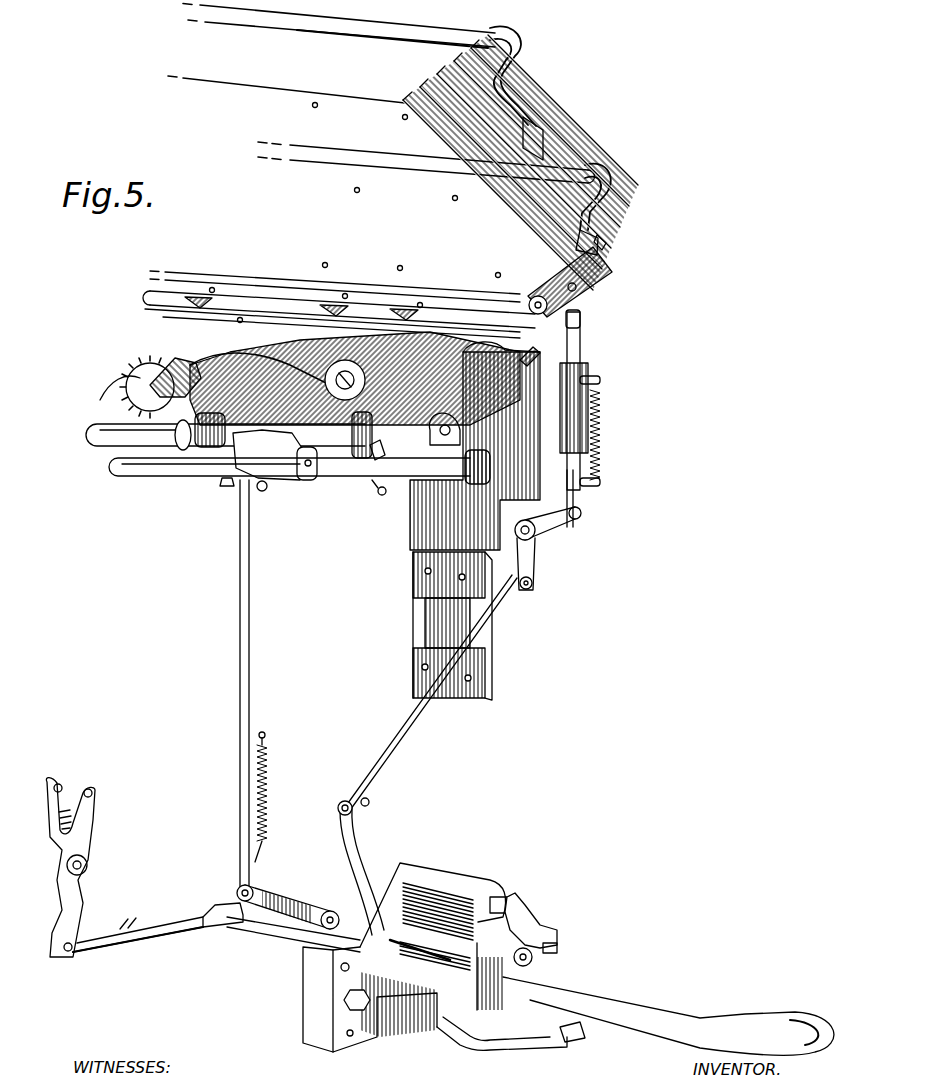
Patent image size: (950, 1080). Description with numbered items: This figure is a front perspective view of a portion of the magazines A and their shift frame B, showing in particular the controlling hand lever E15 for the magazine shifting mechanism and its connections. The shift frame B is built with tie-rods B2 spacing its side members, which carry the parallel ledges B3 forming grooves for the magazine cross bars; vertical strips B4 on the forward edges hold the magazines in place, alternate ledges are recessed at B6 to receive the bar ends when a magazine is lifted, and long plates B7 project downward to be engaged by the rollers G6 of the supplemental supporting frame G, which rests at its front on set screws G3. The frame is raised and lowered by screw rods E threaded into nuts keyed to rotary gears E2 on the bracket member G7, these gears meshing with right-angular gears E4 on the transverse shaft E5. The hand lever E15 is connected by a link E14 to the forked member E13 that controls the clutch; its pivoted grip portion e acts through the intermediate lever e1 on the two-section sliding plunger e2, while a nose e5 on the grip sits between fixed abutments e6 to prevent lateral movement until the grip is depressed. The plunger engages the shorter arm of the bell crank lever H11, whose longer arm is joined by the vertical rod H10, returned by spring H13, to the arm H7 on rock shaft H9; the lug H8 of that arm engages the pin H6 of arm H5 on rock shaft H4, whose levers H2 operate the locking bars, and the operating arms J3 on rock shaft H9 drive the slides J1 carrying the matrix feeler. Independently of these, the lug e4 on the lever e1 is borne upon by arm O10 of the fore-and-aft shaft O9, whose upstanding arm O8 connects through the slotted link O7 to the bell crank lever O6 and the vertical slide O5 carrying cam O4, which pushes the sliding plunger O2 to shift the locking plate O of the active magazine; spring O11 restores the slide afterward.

The tie-rods B2 is at (420, 40).
The ledges B3 is at (450, 138).
The long plates B7 is at (543, 147).
The recesses B6 is at (523, 250).
The vertical strips B4 is at (607, 230).
The supplemental supporting frame G is at (603, 270).
The cam O4 is at (580, 285).
The vertical slide O5 is at (587, 337).
The sliding plunger O2 is at (547, 330).
The slides J1 is at (573, 347).
The spring O11 is at (610, 407).
The operating arms J3 is at (487, 447).
The magazines A is at (334, 177).
The locking plate O is at (443, 297).
The shift frame B is at (342, 371).
The rollers G6 is at (343, 372).
The bracket member G7 is at (97, 383).
The screw rods E is at (177, 367).
The rotary gears E2 is at (130, 378).
The transverse shaft E5 is at (110, 440).
The gears E4 is at (178, 455).
The rock shaft H4 is at (207, 447).
The arm H7 is at (253, 440).
The lug H8 is at (270, 440).
The rock shaft H9 is at (145, 468).
The arm H5 is at (230, 487).
The pin H6 is at (262, 492).
The levers H2 is at (372, 455).
The set screws G3 is at (381, 496).
The bell crank lever O6 is at (543, 523).
The link O7 is at (493, 620).
The upstanding arm O8 is at (369, 802).
The vertical rod H10 is at (250, 640).
The spring H13 is at (266, 772).
The forked member E13 is at (92, 813).
The link E14 is at (163, 927).
The hand lever E15 is at (270, 933).
The bell crank lever H11 is at (287, 900).
The fore-and-aft shaft O9 is at (400, 927).
The sliding plunger e2 is at (505, 898).
The intermediate lever e1 is at (518, 917).
The arm O10 is at (545, 935).
The lug e4 is at (557, 948).
The grip portion e is at (742, 1016).
The nose e5 is at (587, 1037).
The fixed abutments e6 is at (565, 1052).